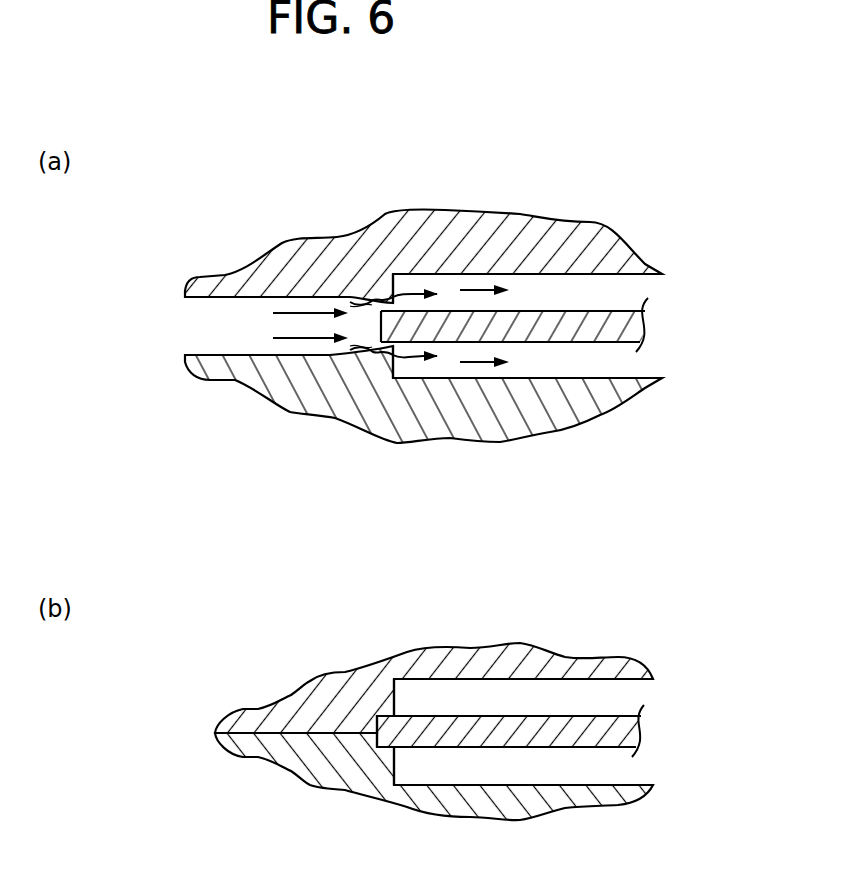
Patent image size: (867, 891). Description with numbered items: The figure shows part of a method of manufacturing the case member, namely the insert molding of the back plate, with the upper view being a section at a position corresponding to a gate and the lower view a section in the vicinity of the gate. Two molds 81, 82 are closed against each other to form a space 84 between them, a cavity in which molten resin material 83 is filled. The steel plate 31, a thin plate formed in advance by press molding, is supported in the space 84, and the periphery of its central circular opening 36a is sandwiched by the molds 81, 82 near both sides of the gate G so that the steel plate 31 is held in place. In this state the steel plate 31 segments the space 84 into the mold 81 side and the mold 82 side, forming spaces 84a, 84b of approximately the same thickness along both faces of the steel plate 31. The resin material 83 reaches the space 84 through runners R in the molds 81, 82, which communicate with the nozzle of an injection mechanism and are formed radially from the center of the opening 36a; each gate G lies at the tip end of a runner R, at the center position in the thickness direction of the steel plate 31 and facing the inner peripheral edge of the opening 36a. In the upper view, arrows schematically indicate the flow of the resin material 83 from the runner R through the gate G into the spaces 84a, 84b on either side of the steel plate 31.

The mold 81 is at (322, 250).
The mold 82 is at (297, 395).
The resin material 83 is at (480, 290).
The space 84 is at (543, 280).
The space 84a is at (593, 282).
The space 84b is at (602, 370).
The steel plate 31 is at (632, 318).
The opening 36a is at (378, 330).
The runner R is at (247, 350).
The gate G is at (362, 347).